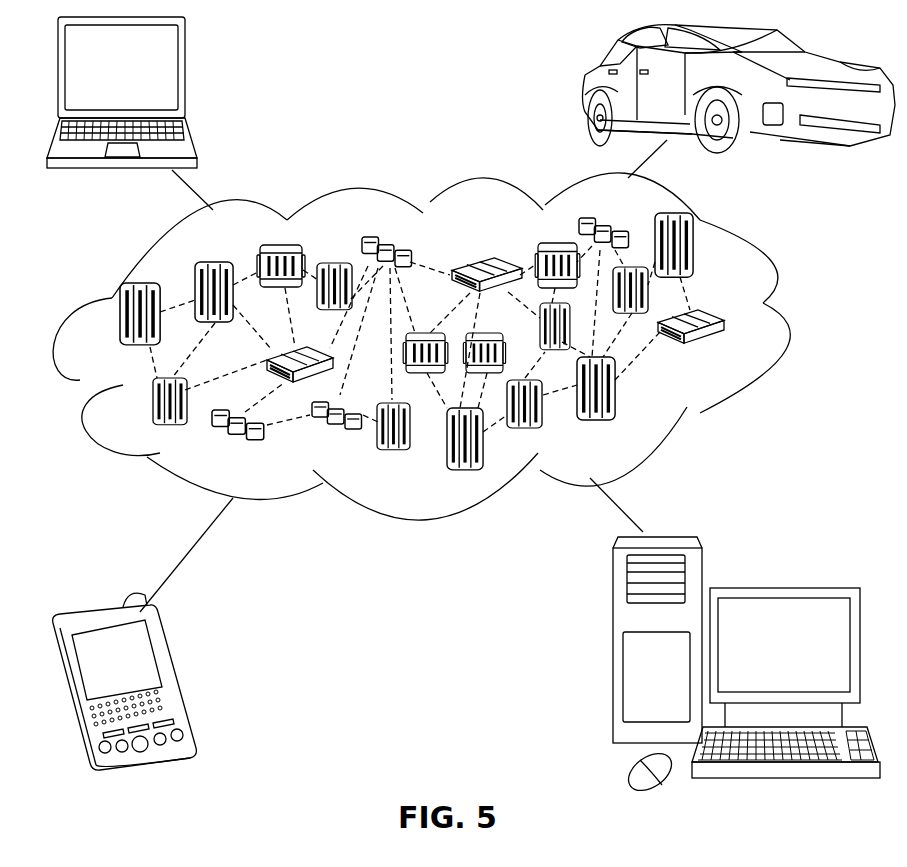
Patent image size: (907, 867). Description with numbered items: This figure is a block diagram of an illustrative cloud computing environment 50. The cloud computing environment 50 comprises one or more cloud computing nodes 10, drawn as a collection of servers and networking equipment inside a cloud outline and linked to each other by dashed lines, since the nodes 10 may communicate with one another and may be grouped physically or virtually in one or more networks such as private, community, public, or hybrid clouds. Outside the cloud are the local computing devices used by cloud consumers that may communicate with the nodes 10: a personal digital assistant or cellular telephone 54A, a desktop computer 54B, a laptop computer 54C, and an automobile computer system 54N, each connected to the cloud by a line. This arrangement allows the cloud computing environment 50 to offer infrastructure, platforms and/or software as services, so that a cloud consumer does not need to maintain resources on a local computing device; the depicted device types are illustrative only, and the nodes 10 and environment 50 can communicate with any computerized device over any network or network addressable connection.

The cloud computing node 10 is at (470, 341).
The cloud computing environment 50 is at (785, 326).
The personal digital assistant or cellular telephone 54A is at (174, 672).
The desktop computer 54B is at (782, 588).
The laptop computer 54C is at (186, 72).
The automobile computer system 54N is at (585, 92).